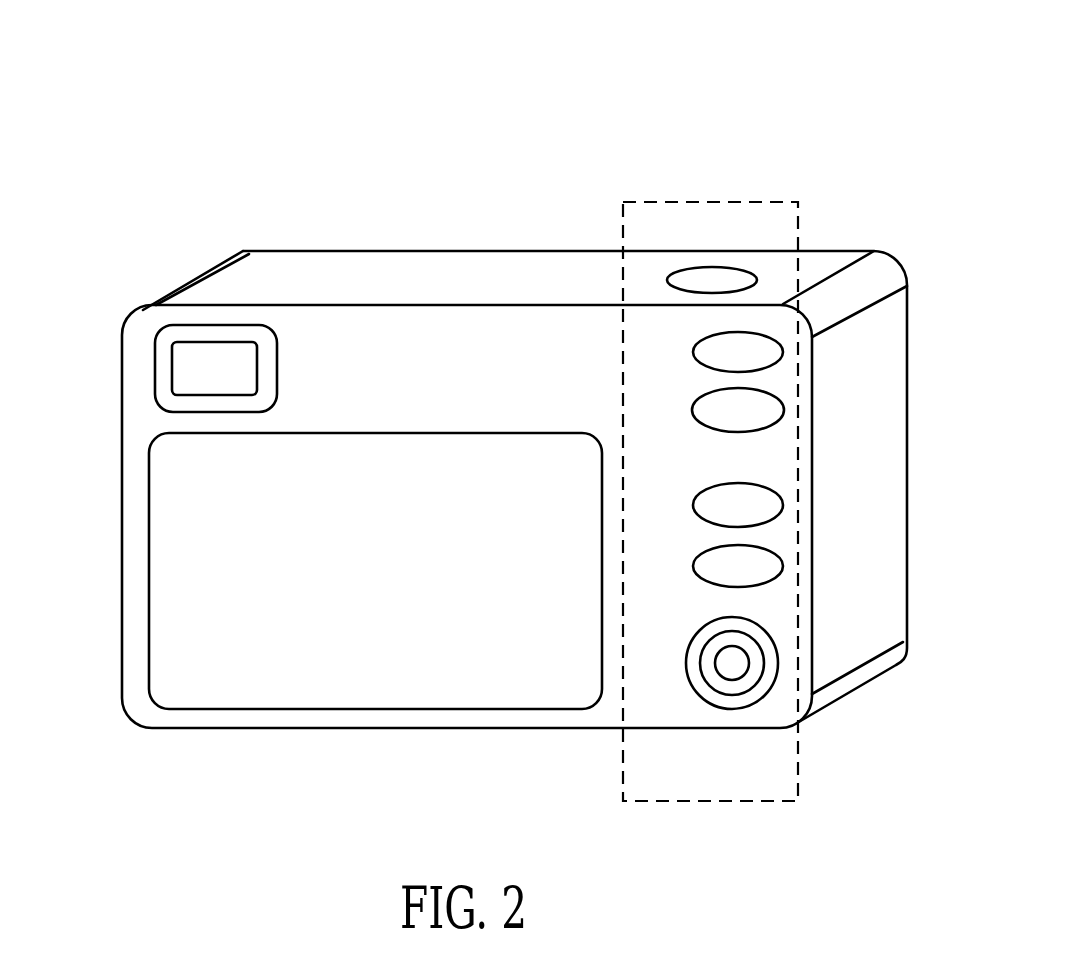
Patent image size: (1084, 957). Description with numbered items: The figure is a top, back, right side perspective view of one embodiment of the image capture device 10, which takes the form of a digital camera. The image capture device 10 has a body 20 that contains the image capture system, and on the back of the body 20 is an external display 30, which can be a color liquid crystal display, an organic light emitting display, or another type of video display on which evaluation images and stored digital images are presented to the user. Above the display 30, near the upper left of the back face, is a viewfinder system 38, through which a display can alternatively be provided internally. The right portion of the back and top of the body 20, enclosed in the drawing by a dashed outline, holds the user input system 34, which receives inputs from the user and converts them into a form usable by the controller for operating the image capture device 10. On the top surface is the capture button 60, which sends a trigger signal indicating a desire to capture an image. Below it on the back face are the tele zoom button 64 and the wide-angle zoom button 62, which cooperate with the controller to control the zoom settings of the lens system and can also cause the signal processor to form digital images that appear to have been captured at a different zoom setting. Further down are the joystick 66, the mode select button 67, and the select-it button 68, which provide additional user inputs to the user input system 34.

The image capture device 10 is at (268, 92).
The body 20 is at (230, 710).
The display 30 is at (171, 554).
The user input system 34 is at (627, 212).
The viewfinder system 38 is at (201, 343).
The capture button 60 is at (718, 277).
The wide-angle zoom button 62 is at (772, 409).
The tele zoom button 64 is at (783, 352).
The joystick 66 is at (783, 507).
The mode select button 67 is at (775, 567).
The select-it button 68 is at (770, 652).